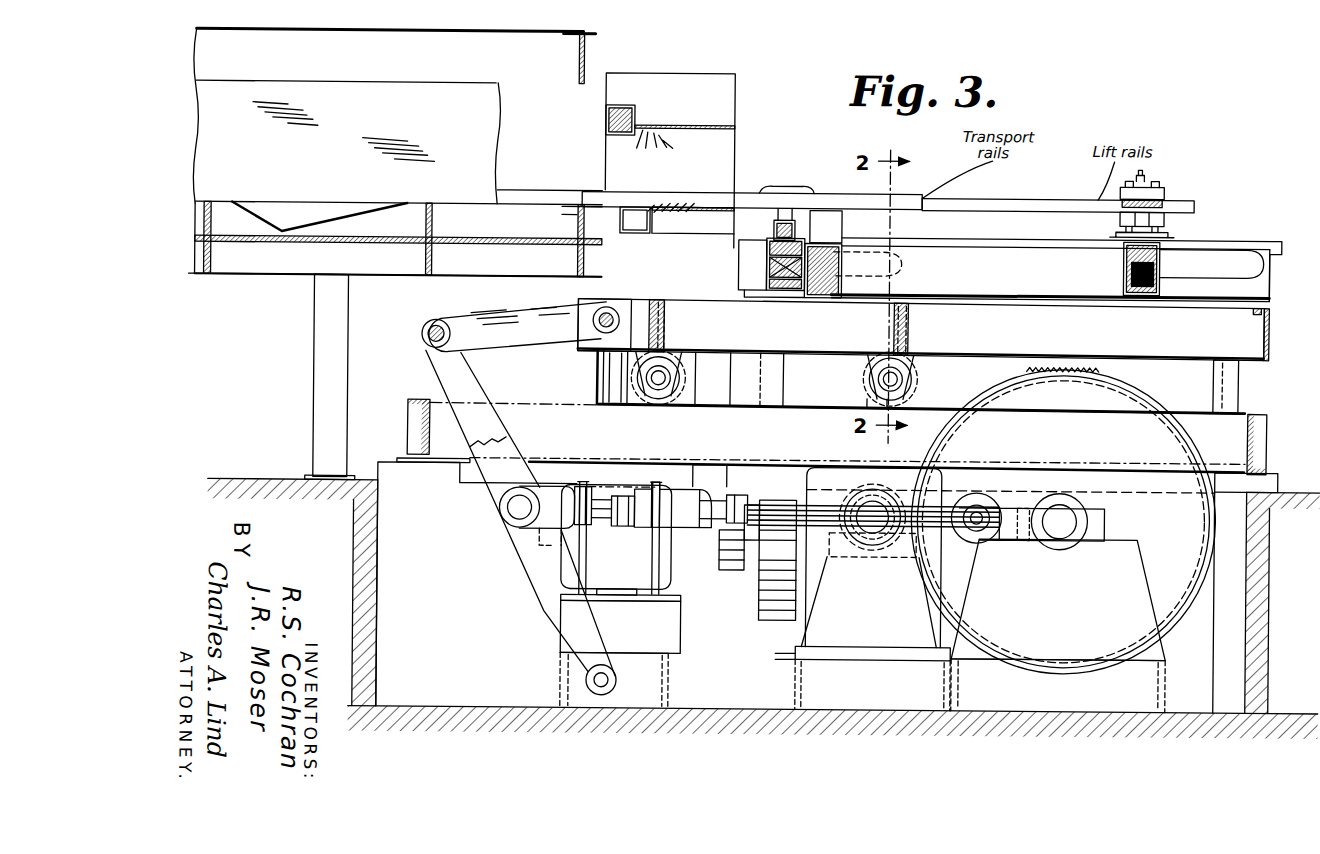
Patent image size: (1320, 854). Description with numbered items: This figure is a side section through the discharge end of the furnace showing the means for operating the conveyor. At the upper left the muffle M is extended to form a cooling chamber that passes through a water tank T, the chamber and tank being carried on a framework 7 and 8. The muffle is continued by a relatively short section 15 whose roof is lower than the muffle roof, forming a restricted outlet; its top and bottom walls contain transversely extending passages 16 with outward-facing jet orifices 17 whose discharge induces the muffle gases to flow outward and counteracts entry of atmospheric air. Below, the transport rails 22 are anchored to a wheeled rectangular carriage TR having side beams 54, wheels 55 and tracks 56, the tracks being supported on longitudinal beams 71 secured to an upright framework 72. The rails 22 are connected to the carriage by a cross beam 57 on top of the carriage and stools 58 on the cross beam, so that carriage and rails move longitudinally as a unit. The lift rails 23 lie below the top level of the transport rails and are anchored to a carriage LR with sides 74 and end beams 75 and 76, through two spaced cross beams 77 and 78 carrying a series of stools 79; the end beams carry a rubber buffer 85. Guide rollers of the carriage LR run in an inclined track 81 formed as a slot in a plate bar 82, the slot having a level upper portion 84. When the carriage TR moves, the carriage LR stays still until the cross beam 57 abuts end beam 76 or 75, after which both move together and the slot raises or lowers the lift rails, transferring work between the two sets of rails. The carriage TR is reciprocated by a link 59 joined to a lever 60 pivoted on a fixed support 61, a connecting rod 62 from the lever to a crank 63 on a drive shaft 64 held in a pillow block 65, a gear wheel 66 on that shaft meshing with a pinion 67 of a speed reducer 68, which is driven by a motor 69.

The framework 7 is at (262, 282).
The framework 8 is at (318, 378).
The muffle M is at (386, 82).
The water tank T is at (585, 53).
The short section 15 is at (686, 123).
The transversely extending passages 16 is at (625, 198).
The jet orifices 17 is at (652, 198).
The transport rails 22 is at (918, 192).
The lift rails 23 is at (788, 200).
The stools 79 is at (773, 209).
The cross beam 77 is at (772, 227).
The stools or pedestals 58 is at (826, 227).
The plate bar 82 is at (745, 259).
The end of carriage LR 75 is at (823, 351).
The cross beam 57 is at (826, 295).
The lift rail carriage LR is at (1056, 270).
The sides of carriage LR 74 is at (881, 265).
The end of carriage LR 76 is at (1122, 248).
The buffer 85 is at (1130, 266).
The upper level track portion 84 is at (1254, 269).
The cross beam 78 is at (1160, 226).
The inclined track 81 is at (1192, 271).
The transport rail carriage TR is at (923, 356).
The side beams of carriage TR 54 is at (634, 320).
The carriage wheels 55 is at (917, 382).
The tracks 56 is at (603, 399).
The longitudinal beams 71 is at (546, 403).
The upright framework 72 is at (1240, 383).
The link 59 is at (523, 330).
The lever 60 is at (432, 366).
The fixed support 61 is at (588, 678).
The motor 69 is at (621, 594).
The connecting rod 62 is at (783, 527).
The pinion 67 is at (873, 543).
The speed reducer 68 is at (824, 475).
The gear wheel 66 is at (1134, 391).
The crank 63 is at (1004, 489).
The drive shaft 64 is at (1063, 543).
The pillow block 65 is at (1140, 543).